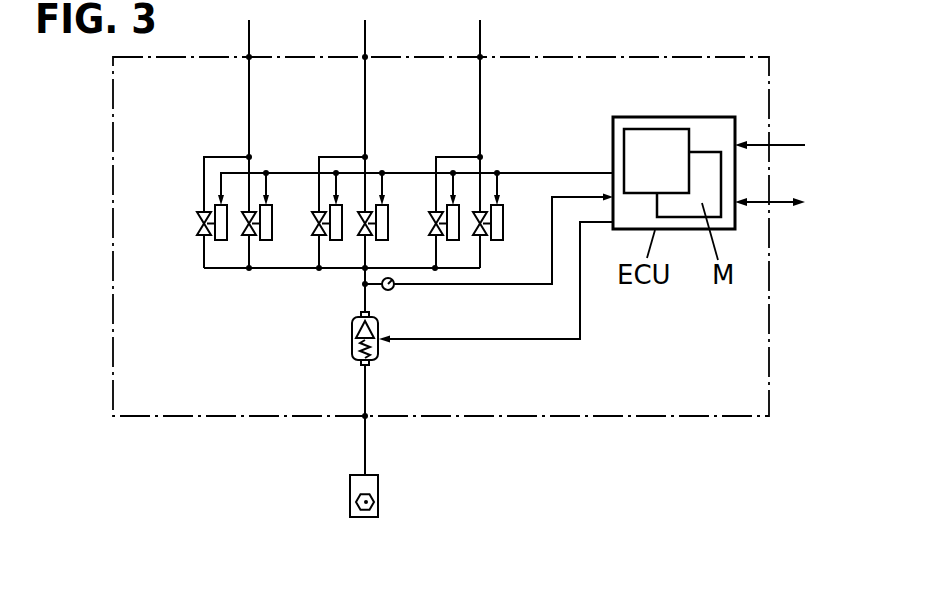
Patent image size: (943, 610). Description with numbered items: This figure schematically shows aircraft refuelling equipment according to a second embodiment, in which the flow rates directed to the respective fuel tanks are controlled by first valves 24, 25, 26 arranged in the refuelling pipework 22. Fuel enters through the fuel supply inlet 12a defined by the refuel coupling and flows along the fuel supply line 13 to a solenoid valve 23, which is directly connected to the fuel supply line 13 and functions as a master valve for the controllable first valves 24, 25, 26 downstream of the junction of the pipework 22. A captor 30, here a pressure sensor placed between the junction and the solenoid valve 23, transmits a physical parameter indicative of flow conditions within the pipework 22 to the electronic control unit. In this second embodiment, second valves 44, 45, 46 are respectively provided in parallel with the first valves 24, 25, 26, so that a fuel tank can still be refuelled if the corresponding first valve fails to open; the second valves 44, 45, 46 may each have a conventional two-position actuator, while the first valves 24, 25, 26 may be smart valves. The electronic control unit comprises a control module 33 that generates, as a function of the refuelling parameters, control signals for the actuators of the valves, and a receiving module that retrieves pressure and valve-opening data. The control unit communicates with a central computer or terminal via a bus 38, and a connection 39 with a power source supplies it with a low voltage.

The pipework 22 is at (249, 105).
The second valve 44 is at (305, 213).
The second valve 45 is at (187, 232).
The second valve 46 is at (442, 198).
The first valve 24 is at (395, 203).
The first valve 25 is at (269, 252).
The first valve 26 is at (513, 204).
The solenoid valve 23 is at (348, 345).
The captor 30 is at (392, 292).
The control module 33 is at (648, 138).
The bus 38 is at (780, 205).
The connection 39 is at (792, 142).
The fuel supply line 13 is at (365, 435).
The fuel supply inlet 12a is at (367, 500).